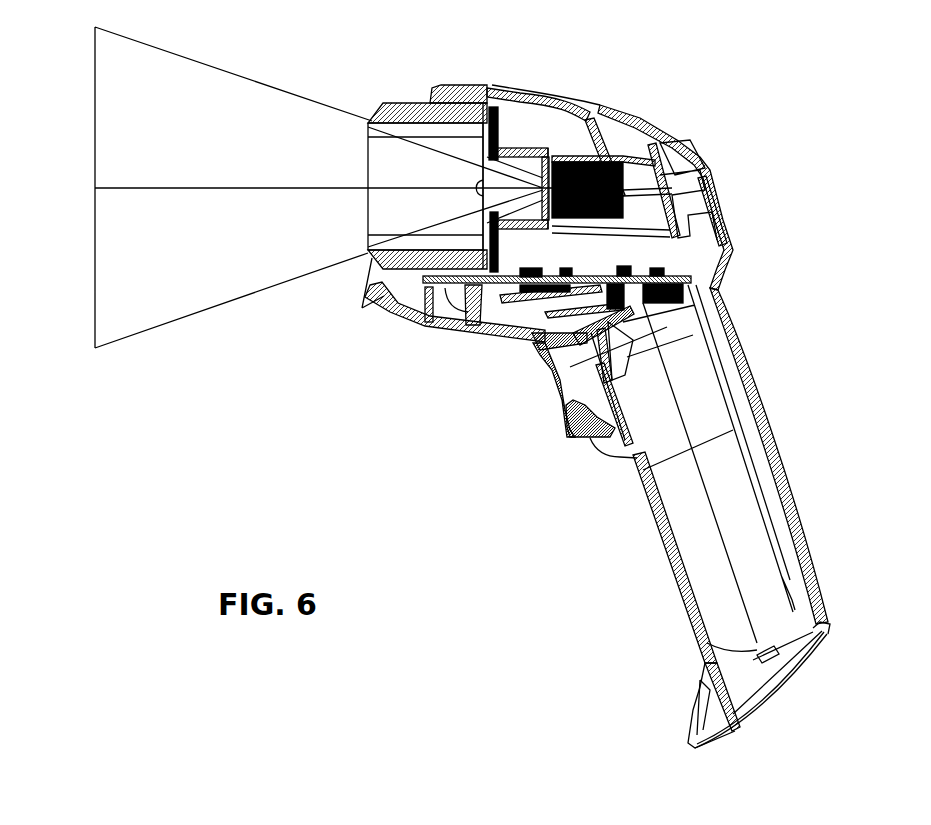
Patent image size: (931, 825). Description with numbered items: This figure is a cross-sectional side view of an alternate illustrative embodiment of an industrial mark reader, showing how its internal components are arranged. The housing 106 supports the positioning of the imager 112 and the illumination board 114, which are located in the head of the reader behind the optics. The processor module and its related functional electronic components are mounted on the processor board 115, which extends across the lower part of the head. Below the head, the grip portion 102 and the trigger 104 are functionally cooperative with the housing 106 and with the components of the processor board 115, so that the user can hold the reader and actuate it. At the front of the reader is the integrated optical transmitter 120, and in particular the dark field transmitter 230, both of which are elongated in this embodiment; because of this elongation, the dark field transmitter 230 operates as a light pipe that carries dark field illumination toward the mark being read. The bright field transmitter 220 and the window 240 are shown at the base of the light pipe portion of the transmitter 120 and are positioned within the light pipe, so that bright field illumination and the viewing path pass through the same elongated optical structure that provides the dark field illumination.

The grip portion 102 is at (766, 408).
The trigger 104 is at (580, 437).
The housing 106 is at (588, 110).
The imager 112 is at (607, 157).
The illumination board 114 is at (491, 105).
The processor board 115 is at (690, 280).
The integrated optical transmitter 120 is at (397, 101).
The bright field transmitter 220 is at (479, 187).
The dark field transmitter 230 is at (373, 121).
The window 240 is at (493, 292).